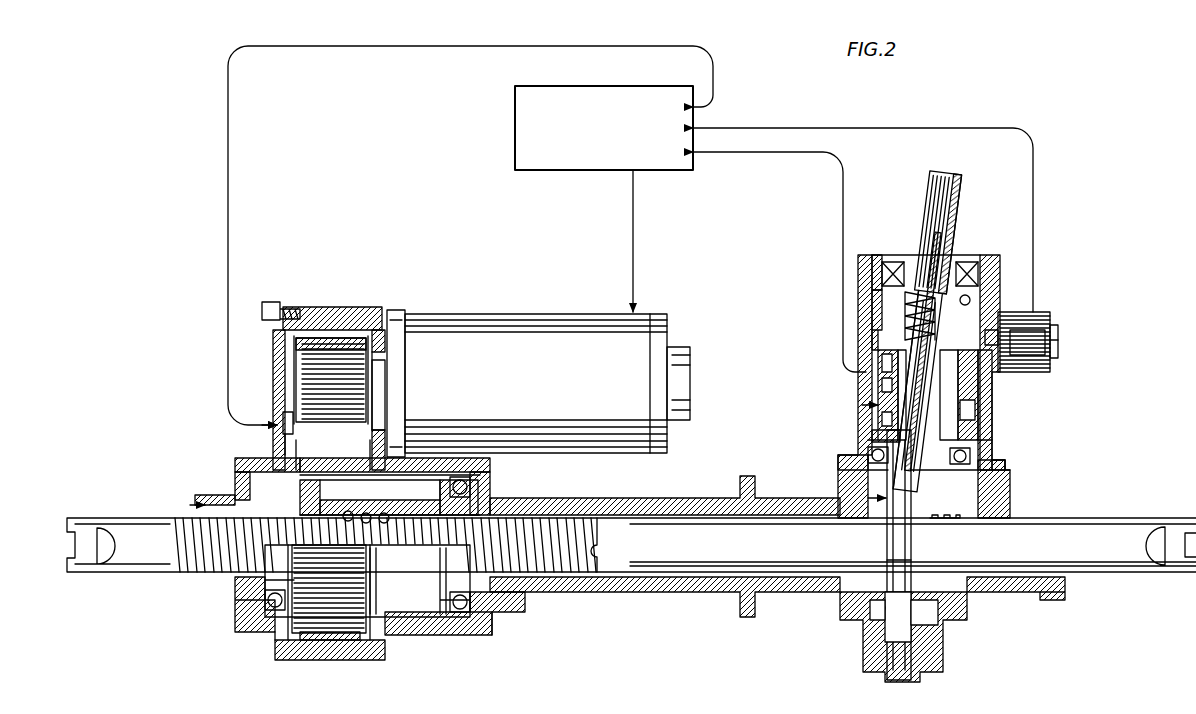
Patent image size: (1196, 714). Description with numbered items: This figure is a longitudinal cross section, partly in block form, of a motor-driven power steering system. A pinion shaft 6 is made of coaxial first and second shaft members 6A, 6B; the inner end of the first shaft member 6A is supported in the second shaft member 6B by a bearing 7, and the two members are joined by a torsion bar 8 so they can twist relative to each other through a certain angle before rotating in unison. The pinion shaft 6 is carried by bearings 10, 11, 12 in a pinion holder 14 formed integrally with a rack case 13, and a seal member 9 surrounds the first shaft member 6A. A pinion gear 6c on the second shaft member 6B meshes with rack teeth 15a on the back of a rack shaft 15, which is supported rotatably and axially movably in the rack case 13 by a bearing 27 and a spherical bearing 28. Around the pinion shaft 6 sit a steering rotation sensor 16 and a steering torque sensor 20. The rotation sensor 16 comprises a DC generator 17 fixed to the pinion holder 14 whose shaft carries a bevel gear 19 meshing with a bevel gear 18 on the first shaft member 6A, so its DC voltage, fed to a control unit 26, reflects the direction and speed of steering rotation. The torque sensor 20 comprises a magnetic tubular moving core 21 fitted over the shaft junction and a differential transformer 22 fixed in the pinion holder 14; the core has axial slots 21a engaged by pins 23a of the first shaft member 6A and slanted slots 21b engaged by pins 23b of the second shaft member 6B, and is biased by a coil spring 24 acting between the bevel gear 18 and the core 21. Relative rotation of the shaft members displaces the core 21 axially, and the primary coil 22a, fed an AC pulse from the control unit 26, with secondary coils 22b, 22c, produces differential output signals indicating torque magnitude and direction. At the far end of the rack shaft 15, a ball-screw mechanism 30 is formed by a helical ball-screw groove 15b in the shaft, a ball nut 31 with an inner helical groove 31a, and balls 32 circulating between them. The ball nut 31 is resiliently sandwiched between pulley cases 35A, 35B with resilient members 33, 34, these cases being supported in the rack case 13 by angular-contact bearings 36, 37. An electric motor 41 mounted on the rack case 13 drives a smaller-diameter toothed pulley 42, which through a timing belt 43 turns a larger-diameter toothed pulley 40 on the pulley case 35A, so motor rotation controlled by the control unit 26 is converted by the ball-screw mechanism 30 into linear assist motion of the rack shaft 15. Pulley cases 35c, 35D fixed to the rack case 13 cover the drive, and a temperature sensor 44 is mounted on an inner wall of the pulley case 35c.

The control unit 26 is at (515, 107).
The rack shaft 15 is at (1135, 520).
The rack teeth 15a is at (945, 521).
The helical ball-screw groove 15b is at (525, 512).
The rack case 13 is at (688, 498).
The electric motor 41 is at (505, 320).
The pulley case 35D is at (347, 307).
The pulley case 35c is at (283, 302).
The smaller-diameter toothed pulley 42 is at (312, 372).
The temperature sensor 44 is at (285, 415).
The resilient member 34 is at (270, 437).
The spherical bearing 28 is at (190, 505).
The ball nut 31 is at (395, 478).
The ball-screw mechanism 30 is at (430, 480).
The resilient member 33 is at (480, 478).
The helical ball-screw groove 31a is at (358, 522).
The balls 32 is at (380, 566).
The larger-diameter toothed pulley 40 is at (345, 620).
The timing belt 43 is at (314, 642).
The pulley case 35A is at (392, 605).
The pulley case 35B is at (245, 598).
The angular-contact bearing 37 is at (272, 615).
The angular-contact bearing 36 is at (465, 612).
The bevel gear 18 is at (870, 292).
The steering torque sensor 20 is at (840, 457).
The second shaft member 6B is at (1010, 494).
The pinion holder 14 is at (1002, 480).
The bearing 11 is at (1007, 462).
The seal member 9 is at (900, 258).
The bearing 10 is at (972, 298).
The pinion shaft 6 is at (975, 210).
The first shaft member 6A is at (958, 176).
The torsion bar 8 is at (958, 262).
The bearing 7 is at (901, 516).
The pinion gear 6c is at (868, 497).
The bearing 12 is at (935, 612).
The bearing 27 is at (1038, 594).
The DC generator 17 is at (1036, 322).
The bevel gear 19 is at (1050, 334).
The coil spring 24 is at (1056, 352).
The steering rotation sensor 16 is at (1075, 362).
The differential transformer 22 is at (864, 405).
The primary coil 22a is at (882, 392).
The secondary coil 22b is at (880, 355).
The secondary coil 22c is at (875, 420).
The slanted slots 21b is at (898, 385).
The pins 23b is at (872, 436).
The magnetic tubular moving core 21 is at (985, 427).
The slots 21a is at (988, 396).
The pins 23a is at (978, 410).